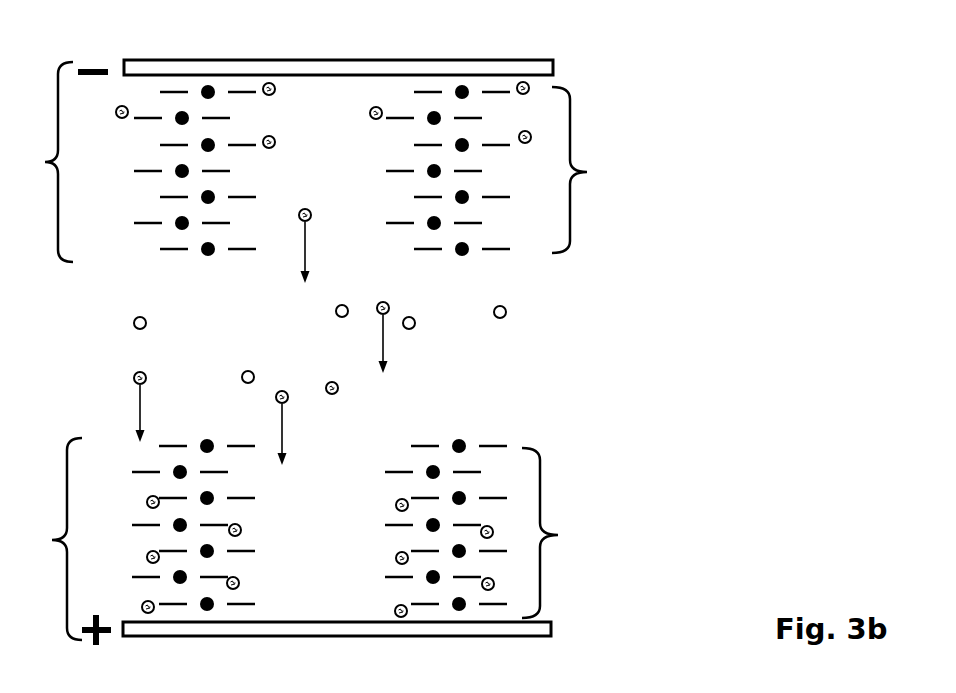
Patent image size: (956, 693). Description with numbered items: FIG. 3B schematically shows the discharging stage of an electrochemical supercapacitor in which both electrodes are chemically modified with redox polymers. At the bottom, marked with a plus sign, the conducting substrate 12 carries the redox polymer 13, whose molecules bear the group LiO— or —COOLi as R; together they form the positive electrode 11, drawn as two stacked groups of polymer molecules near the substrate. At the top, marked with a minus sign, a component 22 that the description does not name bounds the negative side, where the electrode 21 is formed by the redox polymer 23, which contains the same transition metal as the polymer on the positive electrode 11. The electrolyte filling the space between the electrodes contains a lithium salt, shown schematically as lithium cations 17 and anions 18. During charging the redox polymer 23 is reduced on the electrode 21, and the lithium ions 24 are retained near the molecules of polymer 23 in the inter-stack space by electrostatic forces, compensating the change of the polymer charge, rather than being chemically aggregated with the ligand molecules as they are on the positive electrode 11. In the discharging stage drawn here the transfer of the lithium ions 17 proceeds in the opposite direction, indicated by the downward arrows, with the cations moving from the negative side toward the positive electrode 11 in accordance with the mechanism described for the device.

The negative electrode plate 22 is at (552, 70).
The conducting substrate 12 is at (550, 628).
The electrode 21 is at (145, 162).
The redox polymer 23 is at (501, 169).
The electrode 11 is at (136, 539).
The redox polymer 13 is at (492, 528).
The lithium ions 24 is at (531, 134).
The anions 18 is at (507, 308).
The lithium cations 17 is at (290, 400).